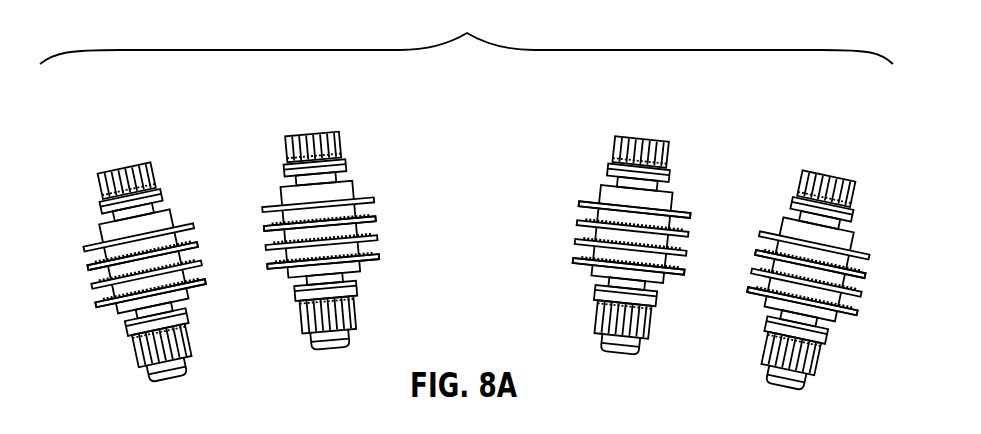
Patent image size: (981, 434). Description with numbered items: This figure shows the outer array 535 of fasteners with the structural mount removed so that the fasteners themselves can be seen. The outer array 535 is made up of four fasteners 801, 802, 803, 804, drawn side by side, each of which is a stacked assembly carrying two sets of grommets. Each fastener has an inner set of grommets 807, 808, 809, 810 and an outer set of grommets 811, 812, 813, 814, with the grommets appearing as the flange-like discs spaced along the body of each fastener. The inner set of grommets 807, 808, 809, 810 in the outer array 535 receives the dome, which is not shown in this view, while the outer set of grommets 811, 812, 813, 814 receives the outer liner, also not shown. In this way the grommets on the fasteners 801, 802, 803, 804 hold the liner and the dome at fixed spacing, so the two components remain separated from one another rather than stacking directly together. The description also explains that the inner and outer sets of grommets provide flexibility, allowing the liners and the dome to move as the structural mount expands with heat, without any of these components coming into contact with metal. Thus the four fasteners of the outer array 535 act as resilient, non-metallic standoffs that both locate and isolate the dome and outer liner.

The outer array 535 is at (466, 32).
The fastener 801 is at (123, 178).
The fastener 802 is at (312, 140).
The fastener 803 is at (643, 138).
The fastener 804 is at (828, 182).
The inner set of grommets 807 is at (108, 298).
The inner set of grommets 808 is at (358, 250).
The inner set of grommets 809 is at (580, 250).
The inner set of grommets 810 is at (833, 300).
The outer set of grommets 811 is at (112, 258).
The outer set of grommets 812 is at (370, 218).
The outer set of grommets 813 is at (617, 215).
The outer set of grommets 814 is at (833, 260).